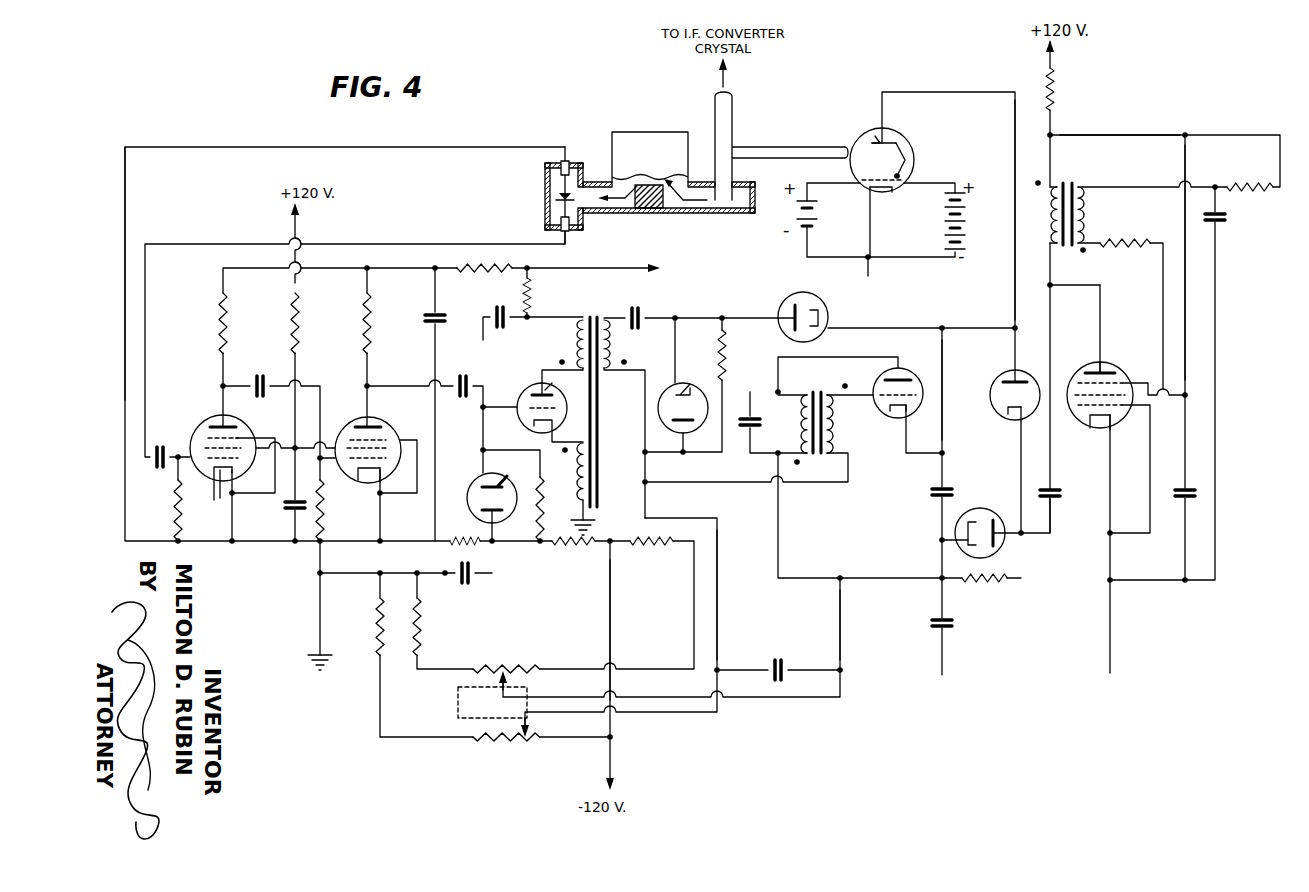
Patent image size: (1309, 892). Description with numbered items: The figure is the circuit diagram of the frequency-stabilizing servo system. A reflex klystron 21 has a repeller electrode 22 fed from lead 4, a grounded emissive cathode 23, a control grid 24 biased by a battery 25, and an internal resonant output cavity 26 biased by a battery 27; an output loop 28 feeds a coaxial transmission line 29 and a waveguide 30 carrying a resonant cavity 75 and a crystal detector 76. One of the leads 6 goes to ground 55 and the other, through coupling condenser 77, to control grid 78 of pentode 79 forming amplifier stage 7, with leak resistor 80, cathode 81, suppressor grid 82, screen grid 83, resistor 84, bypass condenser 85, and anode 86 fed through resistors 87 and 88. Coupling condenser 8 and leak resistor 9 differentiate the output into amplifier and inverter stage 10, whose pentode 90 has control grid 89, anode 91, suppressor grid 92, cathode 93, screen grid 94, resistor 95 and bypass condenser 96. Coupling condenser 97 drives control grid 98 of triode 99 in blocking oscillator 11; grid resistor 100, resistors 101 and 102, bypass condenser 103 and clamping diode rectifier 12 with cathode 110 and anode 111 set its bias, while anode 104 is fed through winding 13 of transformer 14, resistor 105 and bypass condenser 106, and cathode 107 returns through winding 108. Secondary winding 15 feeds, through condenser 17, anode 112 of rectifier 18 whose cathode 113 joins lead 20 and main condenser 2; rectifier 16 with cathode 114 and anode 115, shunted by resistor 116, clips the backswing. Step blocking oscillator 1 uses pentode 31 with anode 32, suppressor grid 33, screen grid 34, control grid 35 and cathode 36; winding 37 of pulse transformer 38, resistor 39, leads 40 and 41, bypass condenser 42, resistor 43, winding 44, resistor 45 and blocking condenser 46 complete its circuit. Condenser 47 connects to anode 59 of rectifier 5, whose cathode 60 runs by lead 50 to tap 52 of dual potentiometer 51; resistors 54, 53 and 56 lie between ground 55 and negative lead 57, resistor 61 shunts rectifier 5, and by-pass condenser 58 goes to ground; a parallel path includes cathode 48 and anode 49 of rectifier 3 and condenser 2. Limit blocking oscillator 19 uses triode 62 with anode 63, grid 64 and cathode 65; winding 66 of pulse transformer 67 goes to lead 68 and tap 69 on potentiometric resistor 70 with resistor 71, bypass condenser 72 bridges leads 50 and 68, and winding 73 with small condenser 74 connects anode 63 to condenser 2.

The step blocking oscillator 1 is at (1104, 389).
The main condenser 2 is at (948, 488).
The rectifier 3 is at (1011, 395).
The lead 4 is at (1015, 115).
The rectifier 5 is at (979, 524).
The leads 6 is at (125, 274).
The amplifier stage 7 is at (224, 449).
The coupling condenser 8 is at (261, 375).
The leak resistor 9 is at (322, 504).
The amplifier and inverter stage 10 is at (393, 451).
The automatic frequency control blocking oscillator 11 is at (538, 386).
The clamping diode rectifier 12 is at (489, 497).
The winding 13 is at (580, 318).
The block-oscillator transformer 14 is at (594, 316).
The secondary winding 15 is at (614, 330).
The diode rectifier 16 is at (682, 407).
The condenser 17 is at (637, 310).
The diode rectifier 18 is at (811, 303).
The limit blocking oscillator 19 is at (802, 420).
The lead 20 is at (943, 420).
The reflex klystron 21 is at (899, 141).
The repeller electrode 22 is at (885, 141).
The emissive cathode 23 is at (880, 190).
The control grid 24 is at (866, 184).
The battery 25 is at (797, 205).
The internal resonant output cavity 26 is at (906, 160).
The battery 27 is at (962, 208).
The output loop 28 is at (889, 163).
The coaxial transmission line 29 is at (808, 145).
The waveguide 30 is at (666, 210).
The pentode 31 is at (1106, 368).
The anode 32 is at (1092, 372).
The suppressor grid 33 is at (1116, 382).
The screen grid 34 is at (1112, 402).
The control grid 35 is at (1086, 418).
The cathode 36 is at (1104, 426).
The winding 37 is at (1050, 215).
The pulse transformer 38 is at (1068, 190).
The resistor 39 is at (1058, 77).
The lead 40 is at (1186, 256).
The lead 41 is at (1104, 137).
The bypass condenser 42 is at (1180, 502).
The resistor 43 is at (1120, 248).
The winding 44 is at (1088, 210).
The resistor 45 is at (1258, 182).
The blocking condenser 46 is at (1226, 220).
The condenser 47 is at (1058, 498).
The cathode 48 is at (1013, 414).
The anode 49 is at (1008, 378).
The lead 50 is at (841, 614).
The dual potentiometer 51 is at (466, 702).
The tap 52 is at (508, 680).
The potentiometric resistor 53 is at (518, 664).
The resistor 54 is at (416, 648).
The ground 55 is at (325, 662).
The resistor 56 is at (655, 546).
The lead 57 is at (611, 596).
The by-pass condenser 58 is at (946, 626).
The anode 59 is at (998, 536).
The cathode 60 is at (966, 532).
The resistor 61 is at (980, 585).
The triode 62 is at (916, 388).
The anode 63 is at (919, 391).
The grid 64 is at (918, 396).
The cathode 65 is at (897, 412).
The winding 66 is at (838, 437).
The pulse transformer 67 is at (815, 390).
The lead 68 is at (719, 588).
The movable arm or tap 69 is at (530, 718).
The potentiometric resistor 70 is at (503, 740).
The resistor 71 is at (378, 630).
The bypass condenser 72 is at (779, 660).
The winding 73 is at (800, 440).
The small condenser 74 is at (748, 416).
The resonant cavity 75 is at (640, 133).
The crystal detector 76 is at (545, 190).
The coupling condenser 77 is at (160, 447).
The control grid 78 is at (236, 460).
The pentode 79 is at (203, 478).
The leak resistor 80 is at (177, 492).
The cathode 81 is at (220, 490).
The suppressor grid 82 is at (240, 435).
The screen grid 83 is at (216, 446).
The resistor 84 is at (294, 333).
The bypass condenser 85 is at (290, 510).
The anode 86 is at (224, 425).
The resistor 87 is at (222, 333).
The resistor 88 is at (480, 266).
The control grid 89 is at (381, 464).
The amplifier and inverter pentode 90 is at (388, 460).
The anode 91 is at (371, 425).
The suppressor grid 92 is at (358, 438).
The cathode 93 is at (362, 480).
The screen grid 94 is at (401, 448).
The resistor 95 is at (366, 333).
The bypass condenser 96 is at (444, 320).
The coupling condenser 97 is at (462, 378).
The control grid 98 is at (526, 416).
The triode 99 is at (530, 394).
The grid resistor 100 is at (546, 512).
The resistor 101 is at (460, 544).
The resistor 102 is at (578, 546).
The bypass condenser 103 is at (469, 582).
The anode 104 is at (565, 387).
The resistor 105 is at (530, 300).
The bypass condenser 106 is at (498, 310).
The cathode 107 is at (555, 434).
The winding 108 is at (577, 478).
The cathode 110 is at (501, 482).
The anode 111 is at (498, 515).
The anode 112 is at (790, 314).
The cathode 113 is at (822, 322).
The cathode 114 is at (684, 388).
The anode 115 is at (675, 426).
The resistor 116 is at (725, 366).